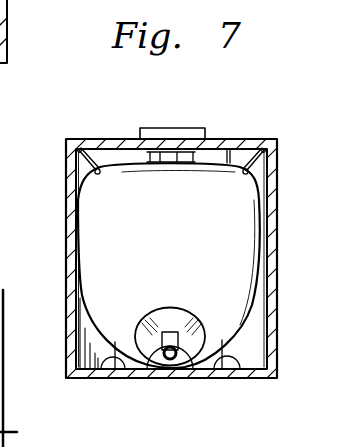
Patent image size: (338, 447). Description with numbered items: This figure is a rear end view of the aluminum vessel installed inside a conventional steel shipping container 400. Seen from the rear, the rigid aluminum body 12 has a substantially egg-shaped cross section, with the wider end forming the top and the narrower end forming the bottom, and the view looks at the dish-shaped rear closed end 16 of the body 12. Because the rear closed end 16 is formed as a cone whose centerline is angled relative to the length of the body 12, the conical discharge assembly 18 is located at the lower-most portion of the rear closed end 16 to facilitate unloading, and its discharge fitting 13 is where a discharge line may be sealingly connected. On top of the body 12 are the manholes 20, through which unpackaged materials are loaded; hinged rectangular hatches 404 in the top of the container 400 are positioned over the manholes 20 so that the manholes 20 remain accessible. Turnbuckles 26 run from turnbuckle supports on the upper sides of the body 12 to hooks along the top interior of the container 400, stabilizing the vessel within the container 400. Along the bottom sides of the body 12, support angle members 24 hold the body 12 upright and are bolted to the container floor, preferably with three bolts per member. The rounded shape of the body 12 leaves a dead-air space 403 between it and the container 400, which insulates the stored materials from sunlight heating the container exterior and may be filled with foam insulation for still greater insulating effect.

The steel shipping container 400 is at (232, 131).
The dead-air space 403 is at (98, 154).
The hinged rectangular hatches 404 is at (187, 128).
The manholes 20 is at (145, 150).
The turnbuckles 26 is at (78, 153).
The aluminum body 12 is at (273, 234).
The rear closed end 16 is at (185, 249).
The support angle members 24 is at (237, 338).
The conical discharge assembly 18 is at (148, 358).
The discharge fitting 13 is at (200, 358).